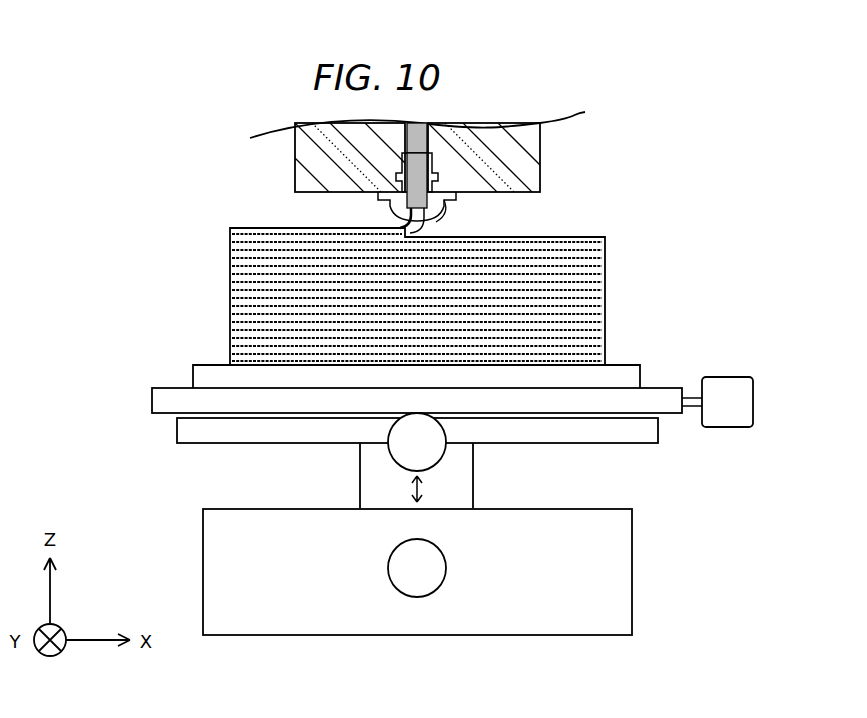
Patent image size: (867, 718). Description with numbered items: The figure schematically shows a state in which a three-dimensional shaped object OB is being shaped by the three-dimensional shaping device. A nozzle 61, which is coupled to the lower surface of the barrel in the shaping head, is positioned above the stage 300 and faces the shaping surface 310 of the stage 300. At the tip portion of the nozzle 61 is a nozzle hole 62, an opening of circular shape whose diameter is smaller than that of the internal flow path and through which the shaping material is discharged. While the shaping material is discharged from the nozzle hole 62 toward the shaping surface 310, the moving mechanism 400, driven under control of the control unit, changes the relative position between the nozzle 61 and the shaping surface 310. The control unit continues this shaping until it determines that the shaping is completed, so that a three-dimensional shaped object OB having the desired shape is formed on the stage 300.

The nozzle 61 is at (441, 204).
The nozzle hole 62 is at (405, 222).
The three-dimensional shaped object OB is at (631, 243).
The shaping surface 310 is at (612, 364).
The stage 300 is at (657, 368).
The moving mechanism 400 is at (673, 500).